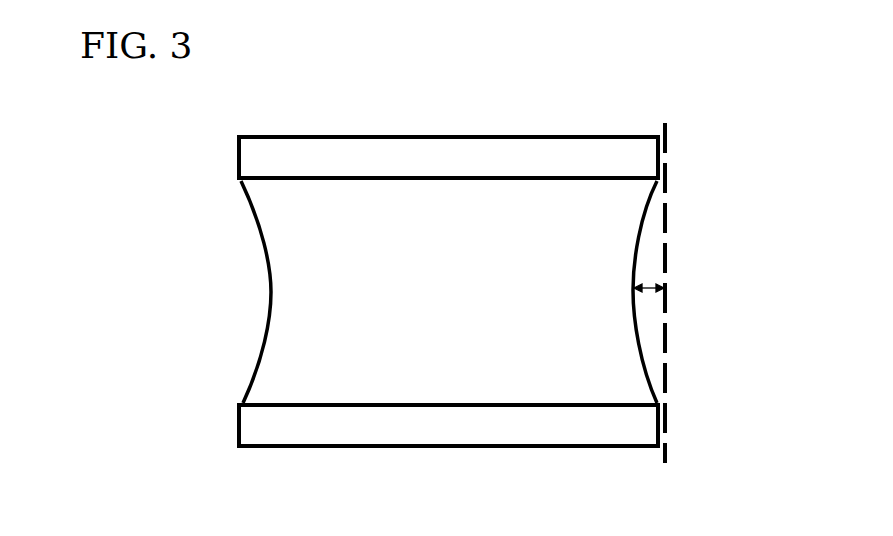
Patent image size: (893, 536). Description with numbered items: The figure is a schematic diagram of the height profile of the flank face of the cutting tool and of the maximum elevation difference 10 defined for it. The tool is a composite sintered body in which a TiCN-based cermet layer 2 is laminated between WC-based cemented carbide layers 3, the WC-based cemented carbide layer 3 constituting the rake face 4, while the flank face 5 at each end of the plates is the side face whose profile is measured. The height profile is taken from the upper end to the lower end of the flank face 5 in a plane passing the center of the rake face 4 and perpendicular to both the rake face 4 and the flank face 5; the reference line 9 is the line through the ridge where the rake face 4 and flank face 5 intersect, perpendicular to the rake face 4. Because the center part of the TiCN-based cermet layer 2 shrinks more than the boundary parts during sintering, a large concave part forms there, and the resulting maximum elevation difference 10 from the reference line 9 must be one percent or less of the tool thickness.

The TiCN-based cermet layer 2 is at (308, 322).
The WC-based cemented carbide layer 3 is at (415, 150).
The rake face 4 is at (528, 136).
The flank face 5 is at (238, 147).
The reference line 9 is at (666, 368).
The maximum elevation difference 10 is at (648, 283).